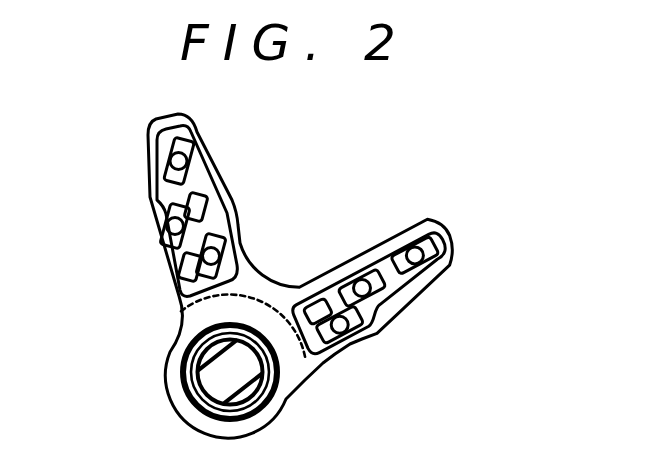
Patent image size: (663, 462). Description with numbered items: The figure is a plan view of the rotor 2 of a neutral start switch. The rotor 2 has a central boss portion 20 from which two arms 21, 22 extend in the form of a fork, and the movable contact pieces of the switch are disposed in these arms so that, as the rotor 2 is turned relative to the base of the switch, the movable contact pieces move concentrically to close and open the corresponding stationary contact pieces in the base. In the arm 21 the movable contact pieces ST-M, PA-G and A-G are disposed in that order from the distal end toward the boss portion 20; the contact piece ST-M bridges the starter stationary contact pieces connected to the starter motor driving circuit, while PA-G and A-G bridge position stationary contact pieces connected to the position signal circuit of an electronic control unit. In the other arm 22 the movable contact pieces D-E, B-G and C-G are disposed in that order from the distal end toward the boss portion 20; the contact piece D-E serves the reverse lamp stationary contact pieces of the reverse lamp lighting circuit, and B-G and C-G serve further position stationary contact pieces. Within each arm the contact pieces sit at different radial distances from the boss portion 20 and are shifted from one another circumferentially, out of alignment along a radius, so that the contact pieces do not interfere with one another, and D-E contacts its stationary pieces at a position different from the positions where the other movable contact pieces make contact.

The rotor 2 is at (176, 306).
The boss portion 20 is at (174, 394).
The arm 21 is at (407, 229).
The arm 22 is at (148, 166).
The movable contact piece D-E is at (182, 157).
The movable contact piece B-G is at (166, 230).
The movable contact piece C-G is at (219, 249).
The movable contact piece PA-G is at (357, 272).
The movable contact piece ST-M is at (420, 278).
The movable contact piece A-G is at (341, 338).